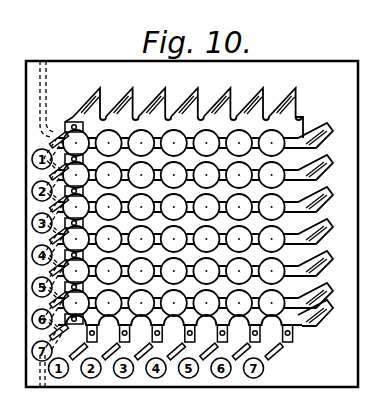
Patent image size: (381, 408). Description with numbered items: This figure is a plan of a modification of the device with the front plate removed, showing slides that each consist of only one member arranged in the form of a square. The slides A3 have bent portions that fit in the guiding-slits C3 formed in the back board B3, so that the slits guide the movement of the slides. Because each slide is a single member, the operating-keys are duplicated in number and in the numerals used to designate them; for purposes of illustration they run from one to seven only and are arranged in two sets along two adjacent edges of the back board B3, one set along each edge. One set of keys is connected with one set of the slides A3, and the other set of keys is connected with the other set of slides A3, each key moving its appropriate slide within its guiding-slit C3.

The slide A3 is at (311, 123).
The back board B3 is at (192, 224).
The guiding-slits C3 is at (320, 138).